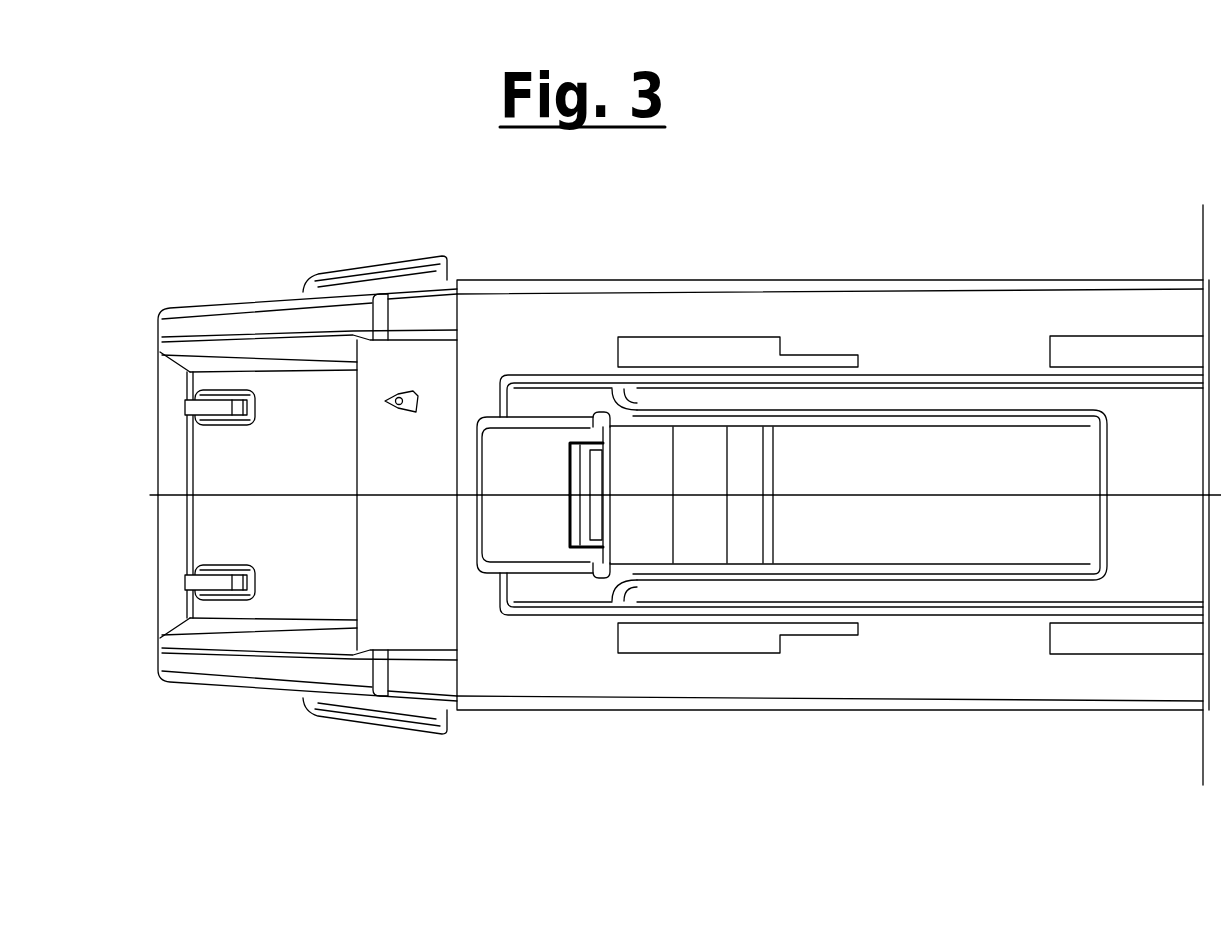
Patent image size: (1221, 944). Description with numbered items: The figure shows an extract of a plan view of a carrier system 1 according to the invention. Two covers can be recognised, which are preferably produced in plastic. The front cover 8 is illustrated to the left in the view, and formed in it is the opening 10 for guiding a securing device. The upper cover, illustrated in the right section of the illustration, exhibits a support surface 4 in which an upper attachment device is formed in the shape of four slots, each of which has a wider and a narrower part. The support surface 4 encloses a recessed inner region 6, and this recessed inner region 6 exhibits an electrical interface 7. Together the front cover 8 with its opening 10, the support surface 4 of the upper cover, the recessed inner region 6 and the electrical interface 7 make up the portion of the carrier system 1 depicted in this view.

The carrier system 1 is at (664, 499).
The support surface 4 is at (960, 338).
The recessed inner region 6 is at (1145, 563).
The electrical interface 7 is at (645, 525).
The front cover 8 is at (255, 658).
The opening 10 is at (418, 396).